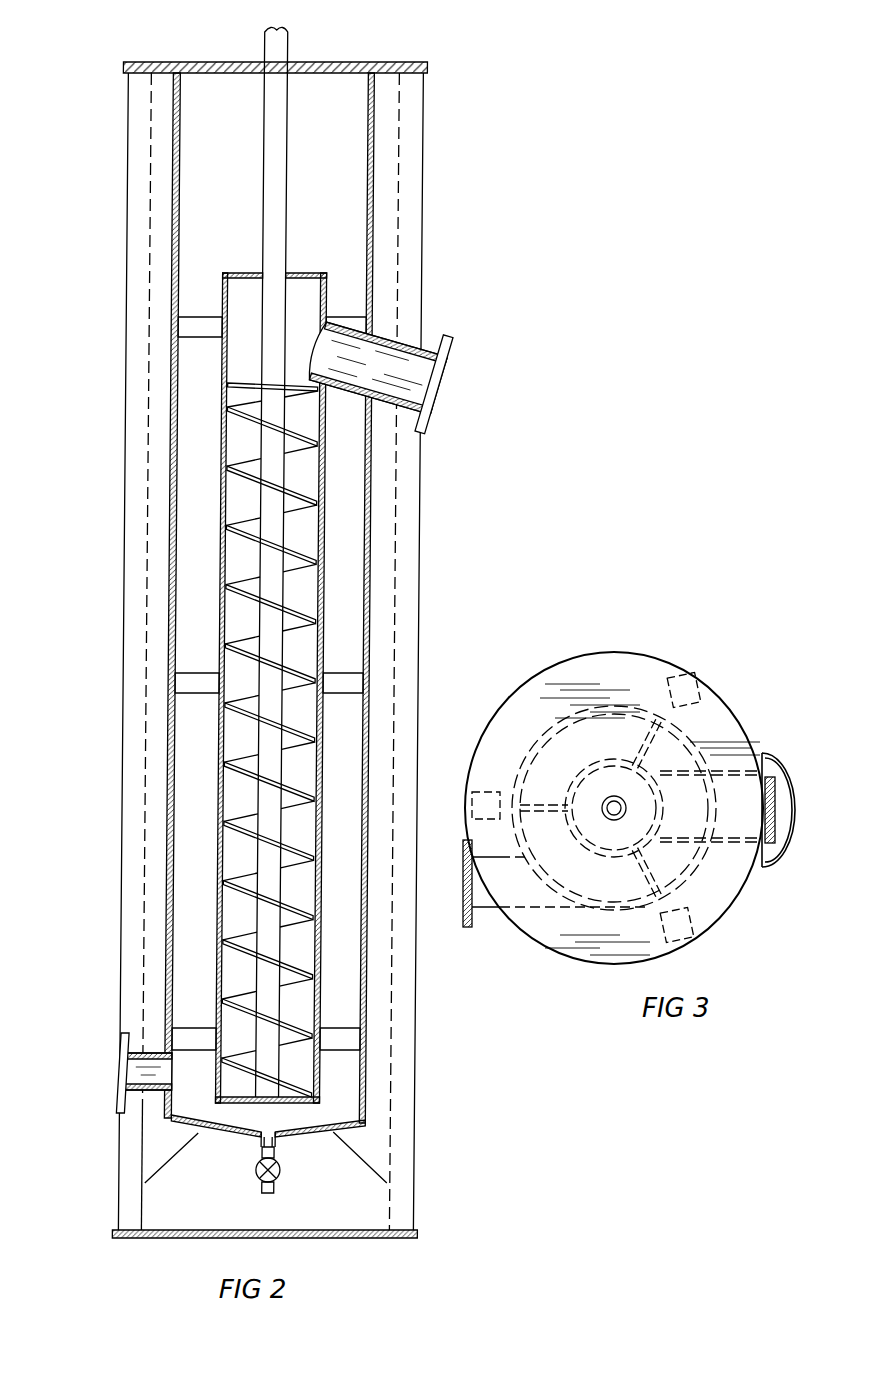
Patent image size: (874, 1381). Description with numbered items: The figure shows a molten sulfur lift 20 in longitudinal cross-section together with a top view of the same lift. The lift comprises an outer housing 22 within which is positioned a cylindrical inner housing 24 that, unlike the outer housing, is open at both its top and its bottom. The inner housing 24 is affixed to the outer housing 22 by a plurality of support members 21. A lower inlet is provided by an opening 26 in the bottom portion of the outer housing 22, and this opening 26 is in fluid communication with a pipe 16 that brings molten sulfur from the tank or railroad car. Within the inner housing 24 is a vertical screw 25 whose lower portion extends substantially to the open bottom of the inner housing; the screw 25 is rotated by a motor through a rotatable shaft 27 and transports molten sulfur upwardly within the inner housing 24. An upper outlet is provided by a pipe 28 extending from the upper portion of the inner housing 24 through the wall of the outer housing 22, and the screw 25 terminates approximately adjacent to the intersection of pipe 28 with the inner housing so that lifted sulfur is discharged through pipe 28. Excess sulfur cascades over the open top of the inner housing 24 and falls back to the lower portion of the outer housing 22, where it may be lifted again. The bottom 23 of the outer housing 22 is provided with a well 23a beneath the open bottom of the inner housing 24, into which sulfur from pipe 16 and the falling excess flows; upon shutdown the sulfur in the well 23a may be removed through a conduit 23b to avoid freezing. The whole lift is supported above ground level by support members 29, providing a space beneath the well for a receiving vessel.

In FIG. 2, the pipe 16 is at (145, 1110).
In FIG. 3, the pipe 16 is at (488, 922).
In FIG. 2, the molten sulfur lift 20 is at (357, 60).
In FIG. 2, the support members 21 is at (196, 322).
In FIG. 3, the support members 21 is at (675, 868).
In FIG. 2, the outer housing 22 is at (375, 188).
In FIG. 3, the outer housing 22 is at (690, 730).
In FIG. 2, the bottom 23 is at (340, 1124).
In FIG. 2, the well 23a is at (300, 1142).
In FIG. 2, the conduit 23b is at (272, 1195).
In FIG. 2, the inner housing 24 is at (230, 560).
In FIG. 3, the inner housing 24 is at (566, 778).
In FIG. 2, the vertical screw 25 is at (238, 775).
In FIG. 2, the opening 26 is at (162, 1076).
In FIG. 2, the rotatable shaft 27 is at (272, 158).
In FIG. 2, the pipe 28 is at (438, 348).
In FIG. 3, the pipe 28 is at (776, 806).
In FIG. 2, the support members 29 is at (390, 1144).